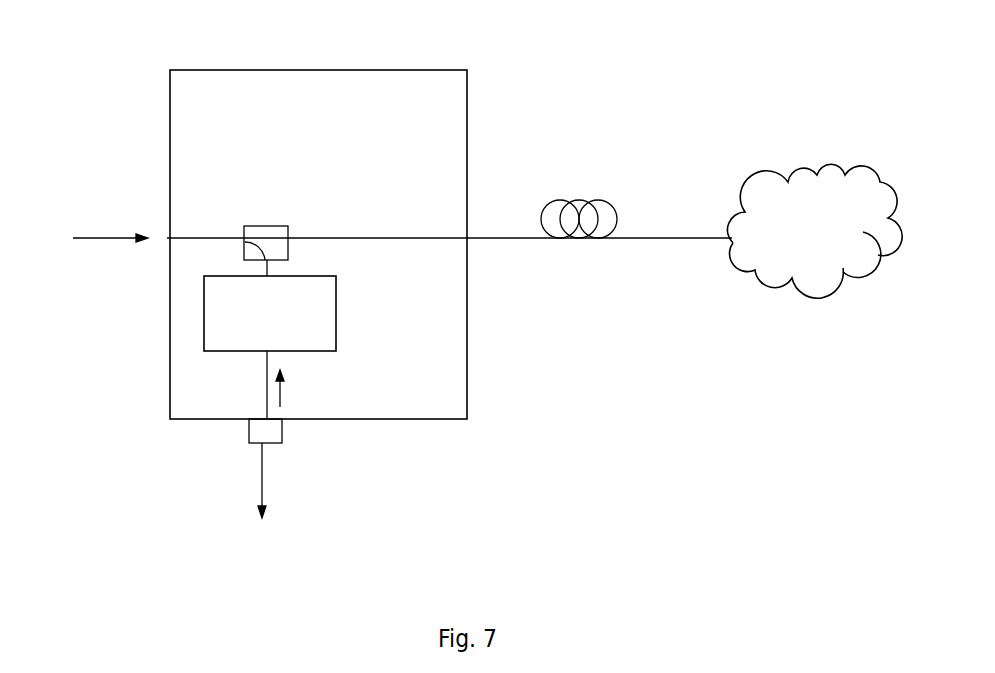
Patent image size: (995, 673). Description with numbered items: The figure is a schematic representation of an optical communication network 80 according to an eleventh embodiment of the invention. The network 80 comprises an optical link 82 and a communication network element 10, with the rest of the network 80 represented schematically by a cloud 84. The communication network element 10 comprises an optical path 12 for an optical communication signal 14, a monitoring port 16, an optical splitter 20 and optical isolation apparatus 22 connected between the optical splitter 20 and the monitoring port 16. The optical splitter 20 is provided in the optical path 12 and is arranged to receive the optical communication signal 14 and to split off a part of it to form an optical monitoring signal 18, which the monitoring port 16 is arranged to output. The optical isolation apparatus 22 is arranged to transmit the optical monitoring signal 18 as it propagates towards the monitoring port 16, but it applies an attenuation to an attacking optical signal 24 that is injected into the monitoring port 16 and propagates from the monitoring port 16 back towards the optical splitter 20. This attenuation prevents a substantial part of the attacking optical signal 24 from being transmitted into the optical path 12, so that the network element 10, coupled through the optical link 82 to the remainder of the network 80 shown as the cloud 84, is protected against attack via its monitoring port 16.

The communication network element 10 is at (411, 125).
The optical path 12 is at (396, 270).
The optical communication signal 14 is at (90, 240).
The monitoring port 16 is at (263, 426).
The optical monitoring signal 18 is at (253, 500).
The optical splitter 20 is at (258, 237).
The optical isolation apparatus 22 is at (204, 351).
The attacking optical signal 24 is at (279, 384).
The optical communication network 80 is at (694, 77).
The optical link 82 is at (617, 238).
The cloud 84 is at (781, 287).